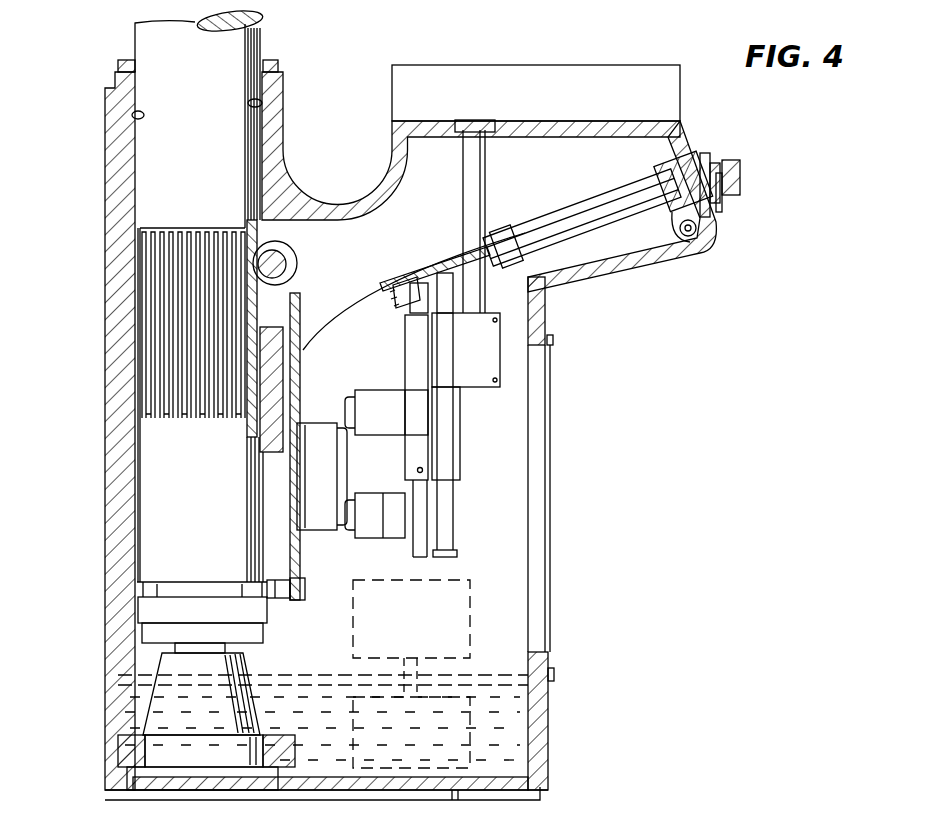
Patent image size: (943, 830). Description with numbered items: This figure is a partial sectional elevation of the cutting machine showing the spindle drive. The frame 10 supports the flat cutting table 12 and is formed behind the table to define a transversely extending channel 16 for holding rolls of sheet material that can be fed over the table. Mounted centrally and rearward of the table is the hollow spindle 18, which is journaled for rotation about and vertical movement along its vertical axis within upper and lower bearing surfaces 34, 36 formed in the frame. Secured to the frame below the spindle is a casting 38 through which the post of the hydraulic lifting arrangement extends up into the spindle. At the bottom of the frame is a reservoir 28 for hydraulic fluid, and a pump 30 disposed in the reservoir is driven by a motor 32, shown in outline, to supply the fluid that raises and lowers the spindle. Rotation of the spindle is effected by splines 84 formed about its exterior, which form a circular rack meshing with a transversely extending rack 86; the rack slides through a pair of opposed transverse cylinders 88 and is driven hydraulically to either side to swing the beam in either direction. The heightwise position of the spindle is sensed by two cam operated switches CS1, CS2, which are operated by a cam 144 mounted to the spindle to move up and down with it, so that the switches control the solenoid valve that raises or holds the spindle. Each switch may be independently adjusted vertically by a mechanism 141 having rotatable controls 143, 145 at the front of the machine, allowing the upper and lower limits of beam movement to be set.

The frame 10 is at (628, 278).
The cutting table 12 is at (603, 78).
The channel 16 is at (318, 205).
The spindle 18 is at (212, 137).
The reservoir 28 is at (335, 753).
The pump 30 is at (437, 757).
The motor 32 is at (463, 605).
The upper bearing surface 34 is at (140, 115).
The lower bearing surface 36 is at (145, 443).
The casting 38 is at (177, 712).
The splines 84 is at (170, 343).
The rack 86 is at (283, 258).
The cylinders 88 is at (293, 273).
The adjusting mechanism 141 is at (466, 412).
The rotatable control 143 is at (735, 172).
The cam 144 is at (315, 432).
The rotatable control 145 is at (722, 210).
The cam operated switch CS1 is at (368, 527).
The cam operated switch CS2 is at (357, 390).